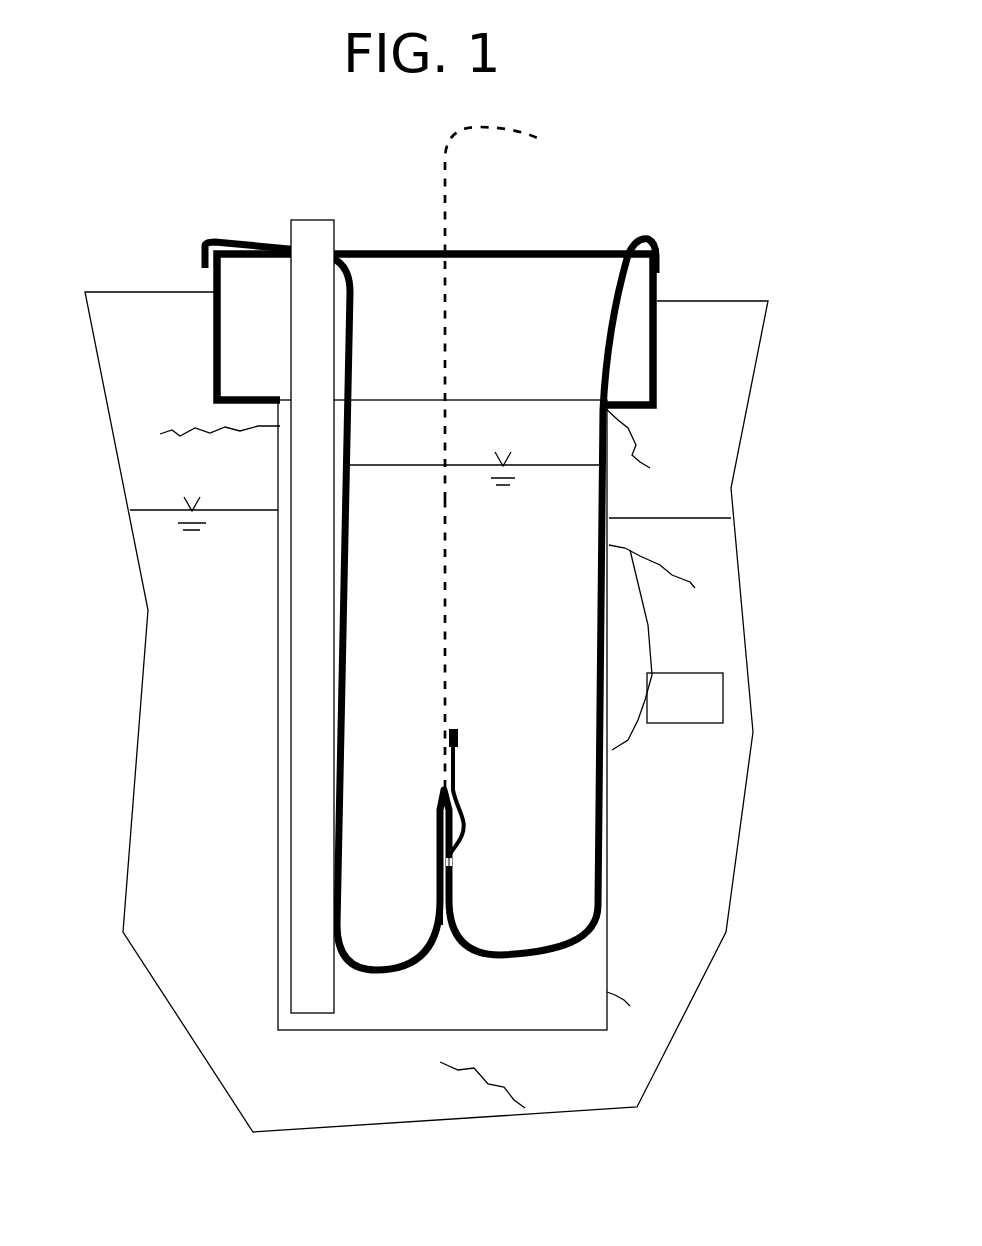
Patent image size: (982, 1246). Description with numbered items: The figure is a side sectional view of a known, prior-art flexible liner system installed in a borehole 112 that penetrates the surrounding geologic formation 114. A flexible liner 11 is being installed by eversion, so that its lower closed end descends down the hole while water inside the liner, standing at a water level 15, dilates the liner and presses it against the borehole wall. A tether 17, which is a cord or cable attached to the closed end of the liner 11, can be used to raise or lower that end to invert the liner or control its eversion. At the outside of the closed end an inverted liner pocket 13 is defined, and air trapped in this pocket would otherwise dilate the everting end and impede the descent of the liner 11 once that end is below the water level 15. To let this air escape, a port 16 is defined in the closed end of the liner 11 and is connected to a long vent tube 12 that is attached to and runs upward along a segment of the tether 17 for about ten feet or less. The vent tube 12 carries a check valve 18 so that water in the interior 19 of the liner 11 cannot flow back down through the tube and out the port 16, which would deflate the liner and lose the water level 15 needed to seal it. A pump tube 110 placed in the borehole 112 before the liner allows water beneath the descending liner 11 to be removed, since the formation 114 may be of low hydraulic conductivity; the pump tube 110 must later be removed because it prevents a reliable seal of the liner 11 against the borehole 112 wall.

The flexible liner 11 is at (573, 942).
The vent tube 12 is at (462, 800).
The inverted liner pocket 13 is at (437, 903).
The water level 15 is at (572, 467).
The port 16 is at (449, 864).
The tether 17 is at (450, 217).
The check valve 18 is at (458, 740).
The interior of the liner 19 is at (489, 644).
The pump tube 110 is at (290, 226).
The borehole 112 is at (607, 992).
The geologic formation 114 is at (685, 698).